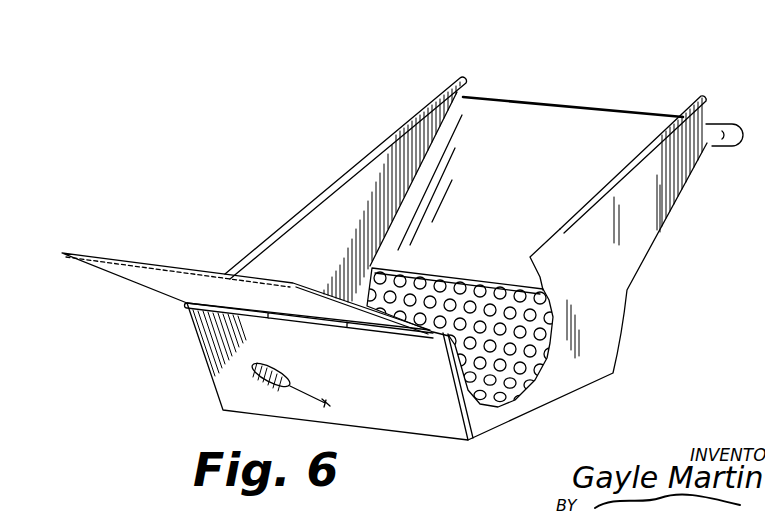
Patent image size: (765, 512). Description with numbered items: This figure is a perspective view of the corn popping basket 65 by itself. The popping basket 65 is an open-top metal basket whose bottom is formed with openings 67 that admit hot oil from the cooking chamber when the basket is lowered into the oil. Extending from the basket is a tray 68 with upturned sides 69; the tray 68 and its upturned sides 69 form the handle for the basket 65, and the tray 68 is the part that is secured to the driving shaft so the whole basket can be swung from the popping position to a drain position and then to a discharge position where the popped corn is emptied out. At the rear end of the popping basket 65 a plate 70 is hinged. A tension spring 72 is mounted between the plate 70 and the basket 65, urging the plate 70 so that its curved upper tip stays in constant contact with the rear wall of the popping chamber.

The popping basket 65 is at (574, 83).
The openings 67 is at (472, 318).
The tray 68 is at (600, 140).
The upturned sides 69 is at (318, 197).
The plate 70 is at (143, 278).
The tension spring 72 is at (278, 366).